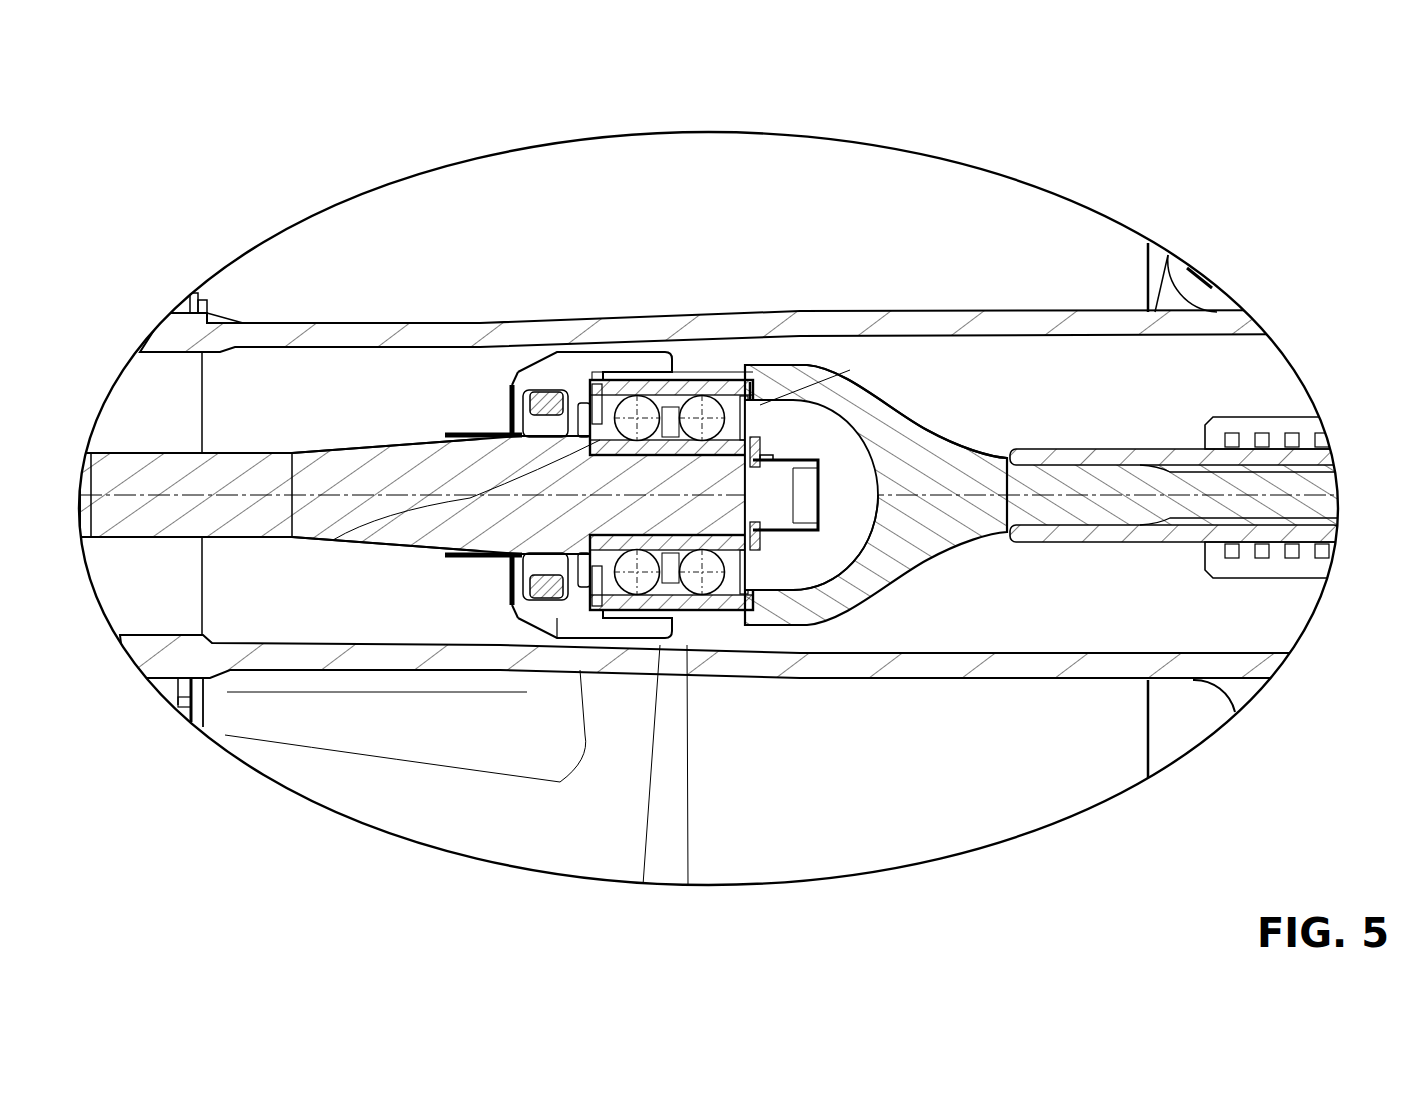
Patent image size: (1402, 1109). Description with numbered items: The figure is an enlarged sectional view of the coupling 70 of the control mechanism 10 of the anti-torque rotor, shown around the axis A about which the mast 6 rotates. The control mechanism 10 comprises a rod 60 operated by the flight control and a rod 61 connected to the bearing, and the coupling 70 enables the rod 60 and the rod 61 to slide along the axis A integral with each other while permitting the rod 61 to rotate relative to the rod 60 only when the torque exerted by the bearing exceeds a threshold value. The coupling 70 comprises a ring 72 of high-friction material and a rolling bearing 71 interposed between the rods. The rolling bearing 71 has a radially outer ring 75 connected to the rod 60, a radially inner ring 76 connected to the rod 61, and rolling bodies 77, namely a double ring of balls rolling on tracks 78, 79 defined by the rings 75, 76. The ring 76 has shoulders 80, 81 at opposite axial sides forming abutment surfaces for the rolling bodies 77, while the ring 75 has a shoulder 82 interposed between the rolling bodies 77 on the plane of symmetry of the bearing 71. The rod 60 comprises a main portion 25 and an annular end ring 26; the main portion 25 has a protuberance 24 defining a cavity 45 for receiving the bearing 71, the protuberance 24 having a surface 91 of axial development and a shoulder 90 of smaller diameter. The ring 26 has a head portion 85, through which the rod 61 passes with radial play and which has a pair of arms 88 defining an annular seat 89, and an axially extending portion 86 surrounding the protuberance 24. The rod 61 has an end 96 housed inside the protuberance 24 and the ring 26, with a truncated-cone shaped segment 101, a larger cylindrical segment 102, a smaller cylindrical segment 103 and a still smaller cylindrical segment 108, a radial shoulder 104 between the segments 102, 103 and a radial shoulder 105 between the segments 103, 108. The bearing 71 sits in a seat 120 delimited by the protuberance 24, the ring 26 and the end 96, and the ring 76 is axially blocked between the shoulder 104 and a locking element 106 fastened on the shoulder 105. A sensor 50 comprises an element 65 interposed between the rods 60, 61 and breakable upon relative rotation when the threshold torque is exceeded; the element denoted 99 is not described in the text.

The control mechanism 10 is at (880, 190).
The coupling 70 is at (681, 215).
The sensor 50 is at (522, 305).
The mast 6 is at (897, 668).
The cavity 45 is at (586, 380).
The annular seat 89 is at (586, 393).
The shoulder 80 is at (602, 378).
The radially outer ring 75 is at (671, 390).
The shoulder 82 is at (682, 400).
The rolling bearing 71 is at (712, 398).
The track 78 is at (713, 357).
The shoulder 81 is at (746, 425).
The radially inner ring 76 is at (770, 380).
The rod 61 is at (357, 478).
The truncated-cone shaped segment 101 is at (327, 458).
The cylindrical segment 102 is at (333, 540).
The rolling bodies 77 is at (643, 463).
The element 65 is at (518, 380).
The arms 88 is at (525, 590).
The head portion 85 is at (520, 400).
The spacer 99 is at (612, 432).
The end 96 is at (395, 600).
The ring 72 is at (568, 622).
The portion 86 is at (608, 634).
The annular end ring 26 is at (565, 647).
The shoulder 90 is at (722, 592).
The surface 91 is at (705, 588).
The seat 120 is at (684, 594).
The protuberance 24 is at (940, 455).
The cylindrical segment 108 is at (925, 400).
The radial shoulder 105 is at (853, 460).
The cylindrical segment 103 is at (940, 532).
The track 79 is at (850, 590).
The locking element 106 is at (760, 455).
The radial shoulder 104 is at (760, 547).
The main portion 25 is at (1095, 427).
The rod 60 is at (1197, 487).
The axis A is at (80, 505).